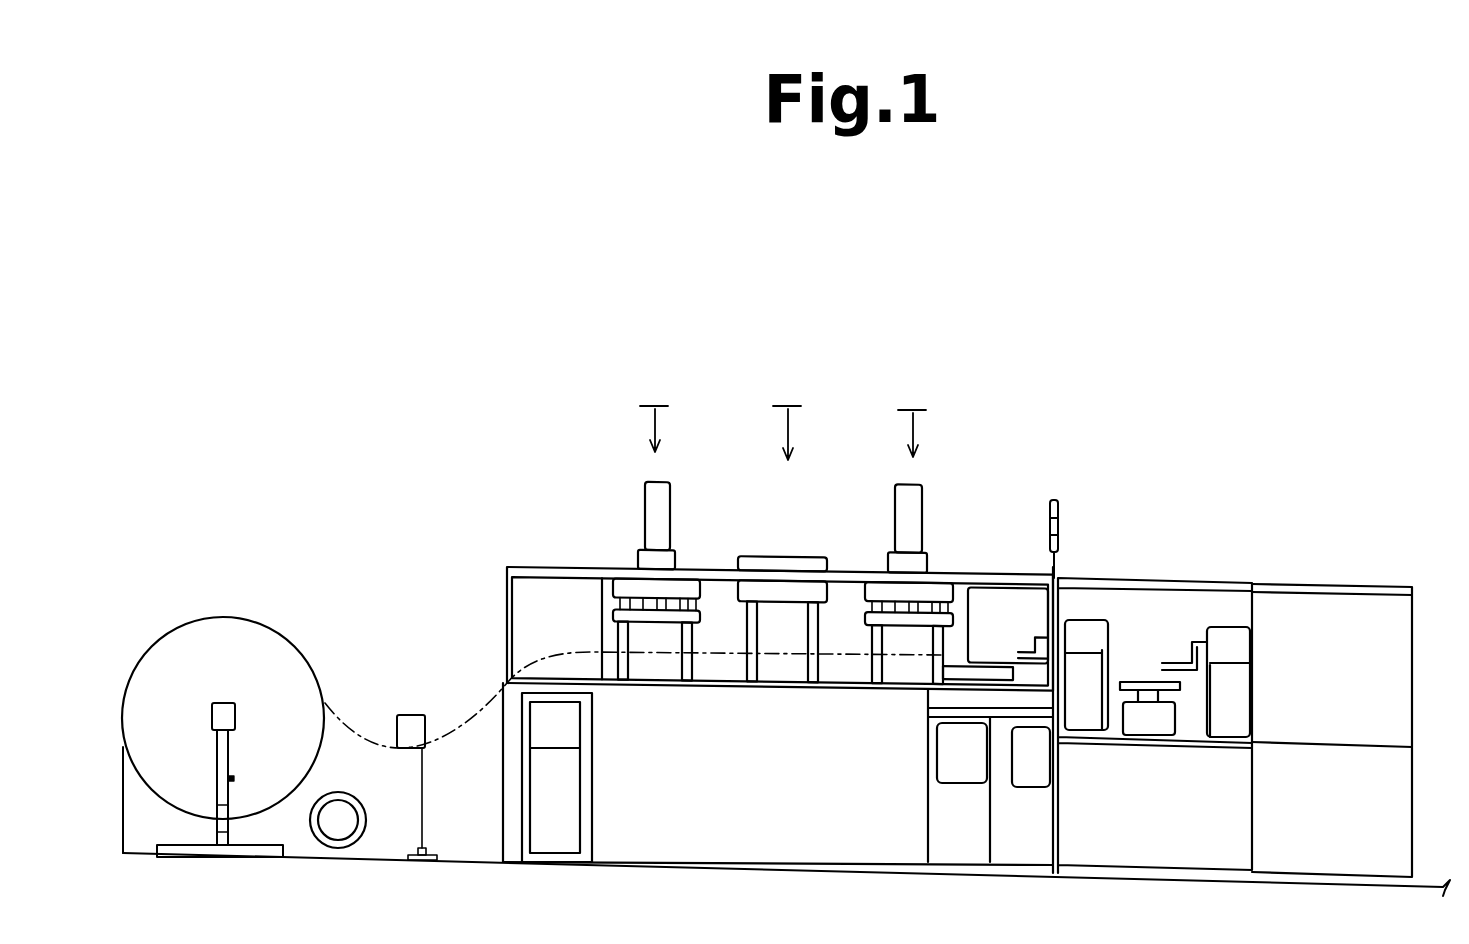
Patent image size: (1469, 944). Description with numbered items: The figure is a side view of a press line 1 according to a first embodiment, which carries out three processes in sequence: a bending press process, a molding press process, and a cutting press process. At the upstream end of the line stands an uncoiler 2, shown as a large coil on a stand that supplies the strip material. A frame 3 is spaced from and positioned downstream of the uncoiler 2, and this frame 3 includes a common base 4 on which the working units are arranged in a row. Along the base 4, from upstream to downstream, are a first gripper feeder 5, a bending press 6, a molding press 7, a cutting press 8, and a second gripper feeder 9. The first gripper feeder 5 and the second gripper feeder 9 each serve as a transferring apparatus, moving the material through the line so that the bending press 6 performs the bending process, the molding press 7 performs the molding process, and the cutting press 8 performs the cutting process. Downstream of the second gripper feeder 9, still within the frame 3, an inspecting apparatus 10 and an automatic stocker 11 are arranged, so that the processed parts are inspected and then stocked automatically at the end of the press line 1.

The press line 1 is at (511, 270).
The uncoiler 2 is at (226, 617).
The frame 3 is at (548, 567).
The common base 4 is at (722, 690).
The first gripper feeder 5 is at (522, 623).
The bending press 6 is at (657, 675).
The molding press 7 is at (788, 668).
The cutting press 8 is at (900, 665).
The second gripper feeder 9 is at (1012, 600).
The inspecting apparatus 10 is at (1158, 603).
The automatic stocker 11 is at (1338, 605).